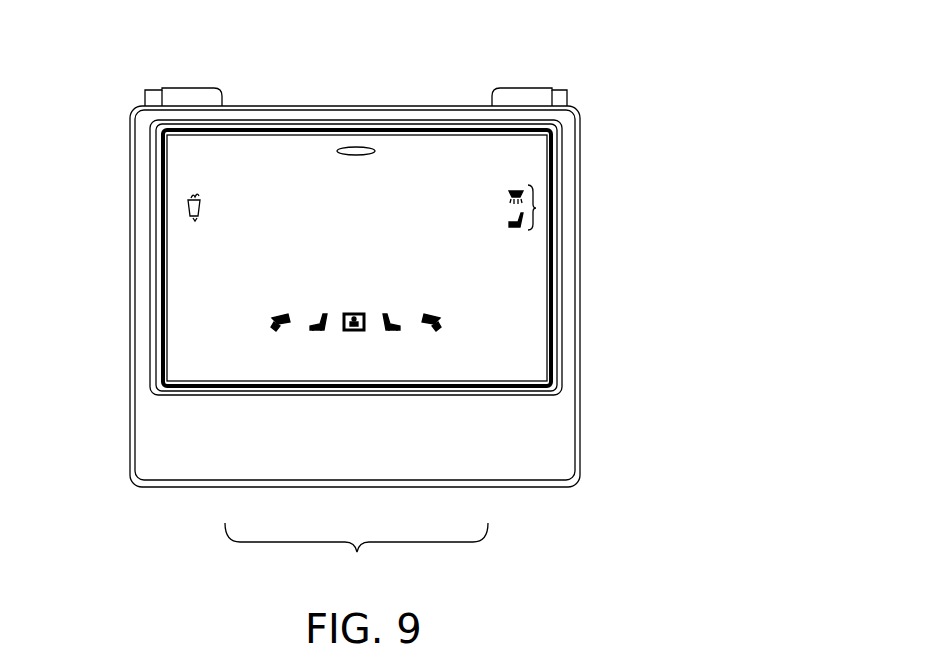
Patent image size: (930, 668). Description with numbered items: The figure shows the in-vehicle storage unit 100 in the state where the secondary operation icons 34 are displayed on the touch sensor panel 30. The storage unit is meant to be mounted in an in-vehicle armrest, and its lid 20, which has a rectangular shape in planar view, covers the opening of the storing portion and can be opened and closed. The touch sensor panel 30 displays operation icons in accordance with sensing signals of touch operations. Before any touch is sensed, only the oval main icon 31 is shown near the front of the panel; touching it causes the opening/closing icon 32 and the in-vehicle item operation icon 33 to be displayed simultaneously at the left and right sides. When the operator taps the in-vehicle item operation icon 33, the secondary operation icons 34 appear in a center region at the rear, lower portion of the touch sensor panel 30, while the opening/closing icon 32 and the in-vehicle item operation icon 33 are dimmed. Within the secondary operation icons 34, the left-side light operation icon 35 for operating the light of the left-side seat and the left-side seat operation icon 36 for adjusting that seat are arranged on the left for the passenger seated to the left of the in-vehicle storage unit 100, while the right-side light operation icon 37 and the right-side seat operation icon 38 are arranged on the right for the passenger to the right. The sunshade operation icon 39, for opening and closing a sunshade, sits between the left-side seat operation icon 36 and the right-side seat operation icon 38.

The in-vehicle storage unit 100 is at (612, 76).
The lid 20 is at (556, 155).
The touch sensor panel 30 is at (373, 259).
The main icon 31 is at (357, 147).
The opening/closing icon 32 is at (187, 211).
The in-vehicle item operation icon 33 is at (537, 208).
The secondary operation icons 34 is at (356, 553).
The left-side light operation icon 35 is at (277, 334).
The left-side seat operation icon 36 is at (315, 334).
The right-side light operation icon 37 is at (435, 334).
The right-side seat operation icon 38 is at (398, 334).
The sunshade operation icon 39 is at (357, 334).